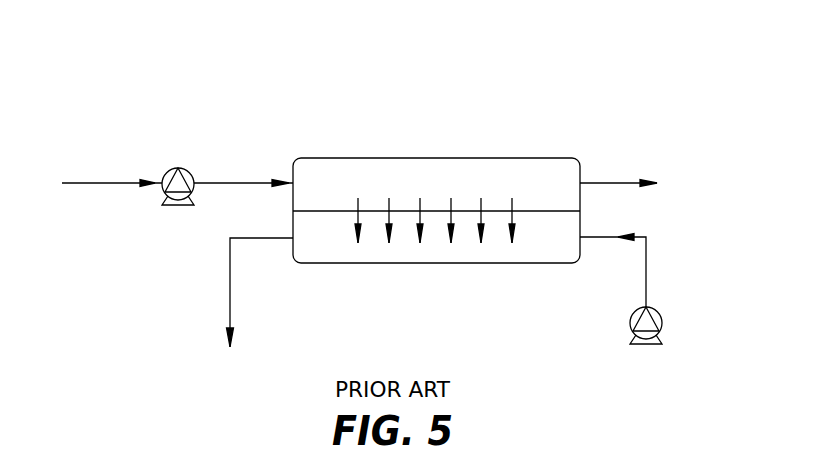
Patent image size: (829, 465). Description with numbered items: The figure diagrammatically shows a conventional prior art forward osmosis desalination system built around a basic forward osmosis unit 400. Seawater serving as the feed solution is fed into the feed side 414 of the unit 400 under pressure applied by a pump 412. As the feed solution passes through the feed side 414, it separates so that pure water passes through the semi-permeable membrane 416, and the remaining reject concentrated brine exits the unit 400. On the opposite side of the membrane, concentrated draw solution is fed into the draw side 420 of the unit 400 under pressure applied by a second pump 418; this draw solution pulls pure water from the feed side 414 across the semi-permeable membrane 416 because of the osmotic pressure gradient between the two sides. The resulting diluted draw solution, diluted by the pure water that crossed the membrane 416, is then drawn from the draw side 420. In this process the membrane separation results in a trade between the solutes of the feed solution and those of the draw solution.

The forward osmosis unit 400 is at (205, 92).
The pump 412 is at (166, 170).
The feed side 414 is at (338, 183).
The semi-permeable membrane 416 is at (542, 210).
The pump 418 is at (663, 313).
The draw side 420 is at (372, 245).